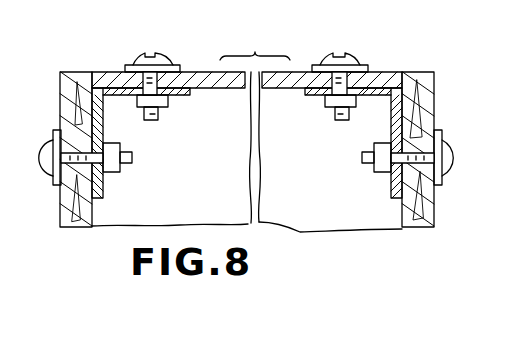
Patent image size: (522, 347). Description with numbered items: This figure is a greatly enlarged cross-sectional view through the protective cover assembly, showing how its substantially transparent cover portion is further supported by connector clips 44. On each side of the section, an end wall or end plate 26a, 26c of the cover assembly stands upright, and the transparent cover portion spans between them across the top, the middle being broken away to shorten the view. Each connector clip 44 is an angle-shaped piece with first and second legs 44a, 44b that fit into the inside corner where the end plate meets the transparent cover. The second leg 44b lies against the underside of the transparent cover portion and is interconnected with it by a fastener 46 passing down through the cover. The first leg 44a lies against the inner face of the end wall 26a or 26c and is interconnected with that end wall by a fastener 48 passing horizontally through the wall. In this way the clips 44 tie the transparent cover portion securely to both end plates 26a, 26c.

The end plate 26a is at (435, 93).
The end plate 26c is at (58, 90).
The connector clip 44 is at (247, 154).
The first leg 44a is at (103, 187).
The second leg 44b is at (181, 96).
The fastener 46 is at (143, 53).
The fastener 48 is at (47, 165).